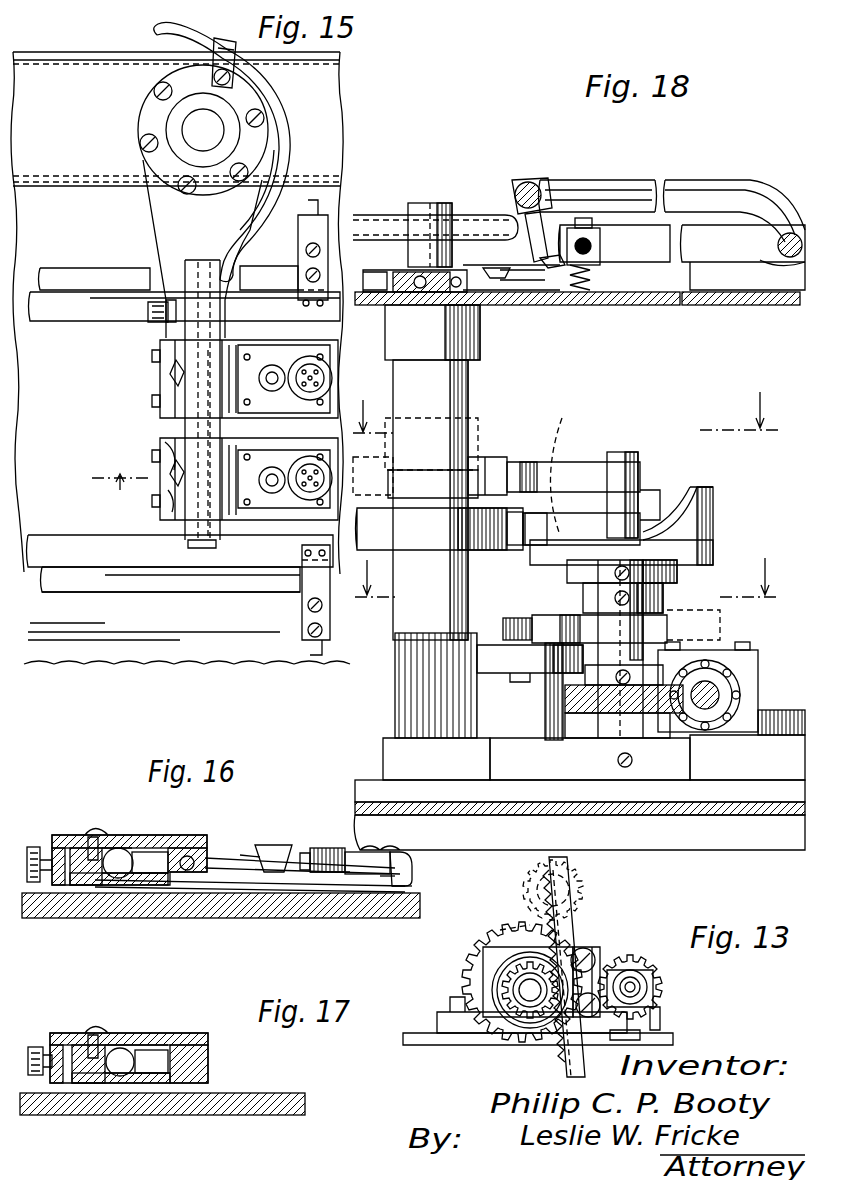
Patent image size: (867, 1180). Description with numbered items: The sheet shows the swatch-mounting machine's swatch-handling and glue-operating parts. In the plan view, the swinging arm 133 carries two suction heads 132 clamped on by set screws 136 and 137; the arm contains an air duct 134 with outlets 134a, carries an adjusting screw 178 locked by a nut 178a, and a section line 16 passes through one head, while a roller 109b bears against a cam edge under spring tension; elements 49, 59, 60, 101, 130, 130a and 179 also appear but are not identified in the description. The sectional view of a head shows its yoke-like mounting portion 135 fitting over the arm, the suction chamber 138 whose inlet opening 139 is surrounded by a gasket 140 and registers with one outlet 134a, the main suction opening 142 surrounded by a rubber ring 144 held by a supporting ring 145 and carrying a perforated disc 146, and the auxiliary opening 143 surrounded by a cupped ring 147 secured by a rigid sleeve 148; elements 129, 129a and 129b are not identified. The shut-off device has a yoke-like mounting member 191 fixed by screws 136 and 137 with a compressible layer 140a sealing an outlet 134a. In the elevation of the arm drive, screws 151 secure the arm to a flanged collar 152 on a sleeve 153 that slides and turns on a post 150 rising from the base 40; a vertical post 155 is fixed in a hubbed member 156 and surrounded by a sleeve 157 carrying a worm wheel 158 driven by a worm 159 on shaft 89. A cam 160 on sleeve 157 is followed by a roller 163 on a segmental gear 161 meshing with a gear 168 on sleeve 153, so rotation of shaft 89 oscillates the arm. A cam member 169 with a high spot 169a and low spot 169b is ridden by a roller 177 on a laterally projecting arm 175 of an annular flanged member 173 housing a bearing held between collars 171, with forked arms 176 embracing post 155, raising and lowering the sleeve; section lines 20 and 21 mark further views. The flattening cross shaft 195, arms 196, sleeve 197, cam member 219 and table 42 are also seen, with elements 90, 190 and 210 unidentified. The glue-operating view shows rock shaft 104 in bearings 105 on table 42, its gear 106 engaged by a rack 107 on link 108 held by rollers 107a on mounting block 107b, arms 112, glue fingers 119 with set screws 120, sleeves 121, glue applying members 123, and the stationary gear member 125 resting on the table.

In FIG. 15, the section line 16 is at (121, 473).
In FIG. 18, the section line 20 is at (566, 425).
In FIG. 18, the section line 21 is at (567, 591).
In FIG. 18, the base 40 is at (790, 806).
In FIG. 18, the table 42 is at (615, 306).
In FIG. 16, the table 42 is at (30, 918).
In FIG. 17, the table 42 is at (60, 1115).
In FIG. 13, the table 42 is at (425, 1040).
In FIG. 15, the rail 49 is at (84, 532).
In FIG. 15, the guide rail 59 is at (50, 278).
In FIG. 15, the rail 60 is at (135, 570).
In FIG. 18, the shaft 89 is at (740, 690).
In FIG. 18, the bearing housing 90 is at (748, 656).
In FIG. 15, the spring 101 is at (168, 470).
In FIG. 13, the rock shaft 104 is at (505, 1000).
In FIG. 18, the bearings 105 is at (540, 292).
In FIG. 13, the gear 106 is at (487, 986).
In FIG. 13, the rack 107 is at (533, 1001).
In FIG. 13, the rollers 107a is at (597, 955).
In FIG. 13, the mounting block 107b is at (600, 960).
In FIG. 13, the link 108 is at (565, 1062).
In FIG. 15, the roller 109b is at (320, 352).
In FIG. 13, the arms 112 is at (582, 892).
In FIG. 13, the glue fingers 119 is at (660, 997).
In FIG. 13, the set screws 120 is at (530, 900).
In FIG. 18, the sleeves 121 is at (480, 460).
In FIG. 13, the glue receiving and applying members 123 is at (625, 1040).
In FIG. 13, the stationary gear member 125 is at (505, 930).
In FIG. 16, the end cap 129 is at (412, 884).
In FIG. 16, the end cap 129a is at (395, 882).
In FIG. 16, the end cap 129b is at (412, 866).
In FIG. 15, the slide bar 130 is at (185, 322).
In FIG. 17, the slide bar 130 is at (125, 1070).
In FIG. 15, the bracket 130a is at (214, 356).
In FIG. 15, the suction heads 132 is at (262, 362).
In FIG. 15, the swinging arm 133 is at (163, 211).
In FIG. 16, the swinging arm 133 is at (95, 885).
In FIG. 17, the swinging arm 133 is at (95, 1085).
In FIG. 16, the suction duct 134 is at (122, 846).
In FIG. 16, the suction outlets 134a is at (140, 875).
In FIG. 17, the suction outlets 134a is at (158, 1042).
In FIG. 18, the yoke-like mounting portion 135 is at (400, 270).
In FIG. 16, the yoke-like mounting portion 135 is at (188, 848).
In FIG. 15, the set screws 136 is at (170, 498).
In FIG. 16, the set screws 136 is at (97, 835).
In FIG. 17, the set screws 136 is at (97, 1033).
In FIG. 15, the set screws 137 is at (155, 362).
In FIG. 16, the set screws 137 is at (36, 846).
In FIG. 17, the set screws 137 is at (36, 1045).
In FIG. 16, the suction chamber 138 is at (232, 878).
In FIG. 16, the inlet opening 139 is at (178, 878).
In FIG. 16, the gasket 140 is at (150, 852).
In FIG. 17, the layer of compressible material 140a is at (160, 1070).
In FIG. 16, the main suction opening 142 is at (348, 860).
In FIG. 16, the auxiliary suction opening 143 is at (276, 848).
In FIG. 16, the ring 144 is at (322, 880).
In FIG. 16, the supporting ring 145 is at (306, 853).
In FIG. 16, the perforated disc 146 is at (352, 878).
In FIG. 15, the cupped ring 147 is at (277, 397).
In FIG. 16, the cupped ring 147 is at (240, 855).
In FIG. 16, the rigid sleeve 148 is at (265, 882).
In FIG. 15, the post 150 is at (192, 126).
In FIG. 18, the post 150 is at (430, 204).
In FIG. 15, the screws 151 is at (155, 91).
In FIG. 18, the flanged collar 152 is at (482, 340).
In FIG. 18, the sleeve 153 is at (472, 392).
In FIG. 18, the vertical post 155 is at (625, 455).
In FIG. 18, the hubbed member 156 is at (682, 766).
In FIG. 18, the sleeve 157 is at (650, 640).
In FIG. 18, the worm wheel 158 is at (565, 697).
In FIG. 18, the worm 159 is at (725, 696).
In FIG. 18, the cam 160 is at (712, 632).
In FIG. 18, the segmental gear 161 is at (502, 667).
In FIG. 18, the roller 163 is at (505, 625).
In FIG. 18, the gear 168 is at (395, 686).
In FIG. 18, the cam member 169 is at (715, 522).
In FIG. 18, the high spot 169a is at (715, 488).
In FIG. 18, the low spot 169b is at (532, 557).
In FIG. 18, the collars 171 is at (395, 558).
In FIG. 18, the annular flanged member 173 is at (415, 458).
In FIG. 18, the laterally projecting arm 175 is at (612, 535).
In FIG. 18, the forked arms 176 is at (690, 470).
In FIG. 18, the roller 177 is at (567, 469).
In FIG. 15, the adjusting screw 178 is at (150, 305).
In FIG. 15, the nut 178a is at (168, 303).
In FIG. 15, the hook arm 179 is at (283, 115).
In FIG. 18, the link 190 is at (560, 236).
In FIG. 17, the yoke-like mounting member 191 is at (212, 1052).
In FIG. 18, the cross shaft 195 is at (515, 193).
In FIG. 18, the arms 196 is at (702, 180).
In FIG. 18, the sleeve 197 is at (508, 270).
In FIG. 18, the rail 210 is at (640, 261).
In FIG. 18, the cam member 219 is at (600, 245).